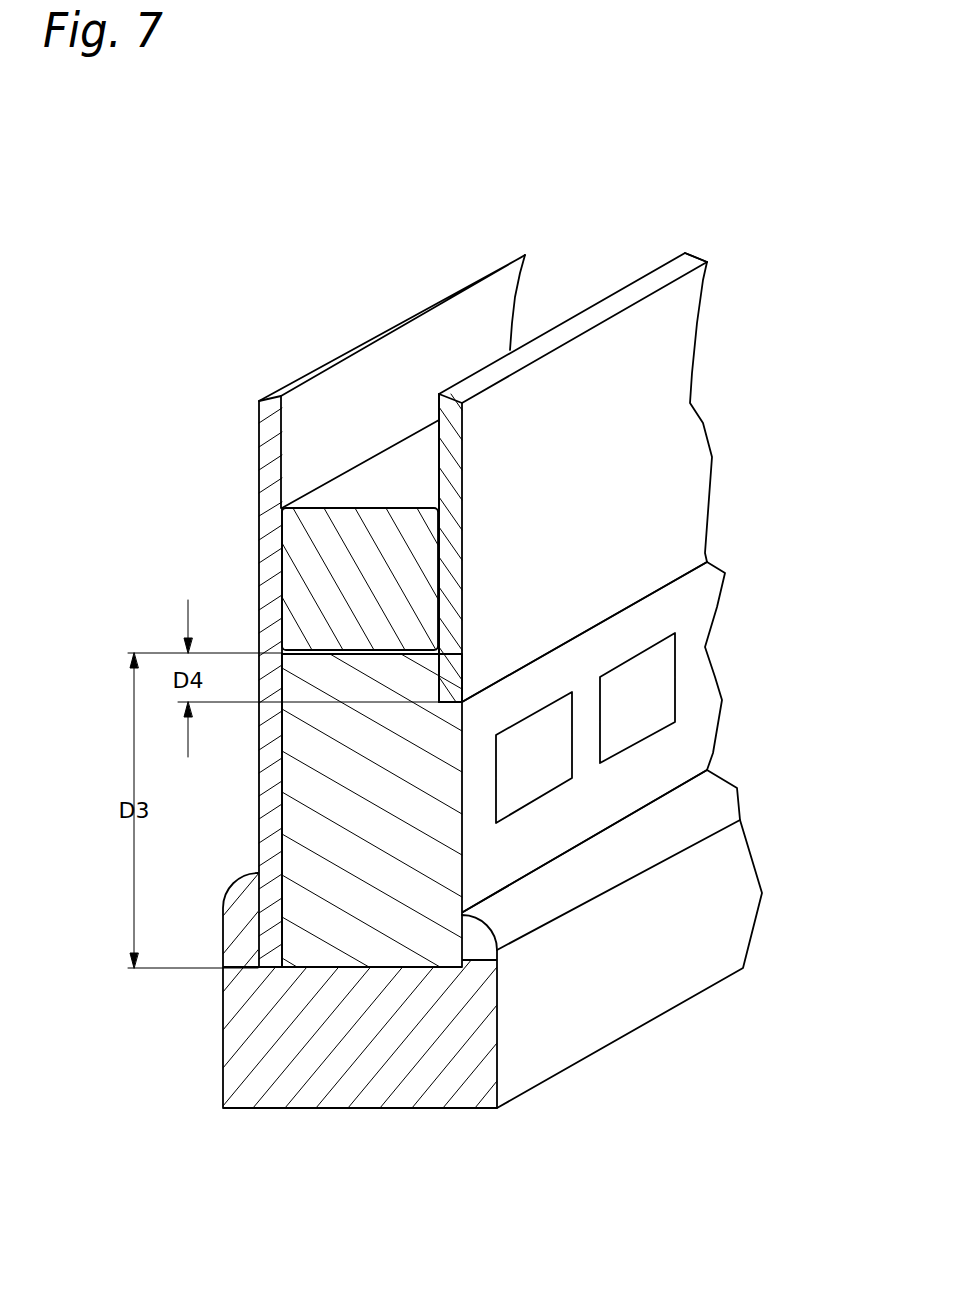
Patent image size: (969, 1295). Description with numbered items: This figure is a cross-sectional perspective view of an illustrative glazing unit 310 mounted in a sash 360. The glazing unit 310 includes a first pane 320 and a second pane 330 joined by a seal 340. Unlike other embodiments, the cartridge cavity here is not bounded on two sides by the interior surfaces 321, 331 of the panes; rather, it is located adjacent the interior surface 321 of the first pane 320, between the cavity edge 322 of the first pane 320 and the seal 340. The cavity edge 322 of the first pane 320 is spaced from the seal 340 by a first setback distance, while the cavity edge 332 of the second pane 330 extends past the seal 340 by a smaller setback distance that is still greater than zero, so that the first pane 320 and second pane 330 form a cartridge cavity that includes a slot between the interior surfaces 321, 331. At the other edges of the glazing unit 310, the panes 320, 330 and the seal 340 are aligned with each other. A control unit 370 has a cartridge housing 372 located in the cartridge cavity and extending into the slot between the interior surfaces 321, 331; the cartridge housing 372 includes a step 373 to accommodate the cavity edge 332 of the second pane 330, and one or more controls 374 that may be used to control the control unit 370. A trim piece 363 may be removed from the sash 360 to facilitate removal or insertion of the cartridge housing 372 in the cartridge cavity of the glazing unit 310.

The glazing unit 310 is at (474, 238).
The first pane 320 is at (410, 312).
The interior surface of the first pane 321 is at (310, 420).
The cavity edge of the first pane 322 is at (268, 970).
The second pane 330 is at (672, 273).
The interior surface of the second pane 331 is at (432, 462).
The cavity edge of the second pane 332 is at (450, 707).
The seal 340 is at (300, 562).
The sash 360 is at (640, 997).
The trim piece 363 is at (580, 887).
The control unit 370 is at (764, 648).
The cartridge housing 372 is at (632, 792).
The step 373 is at (460, 700).
The controls 374 is at (553, 737).